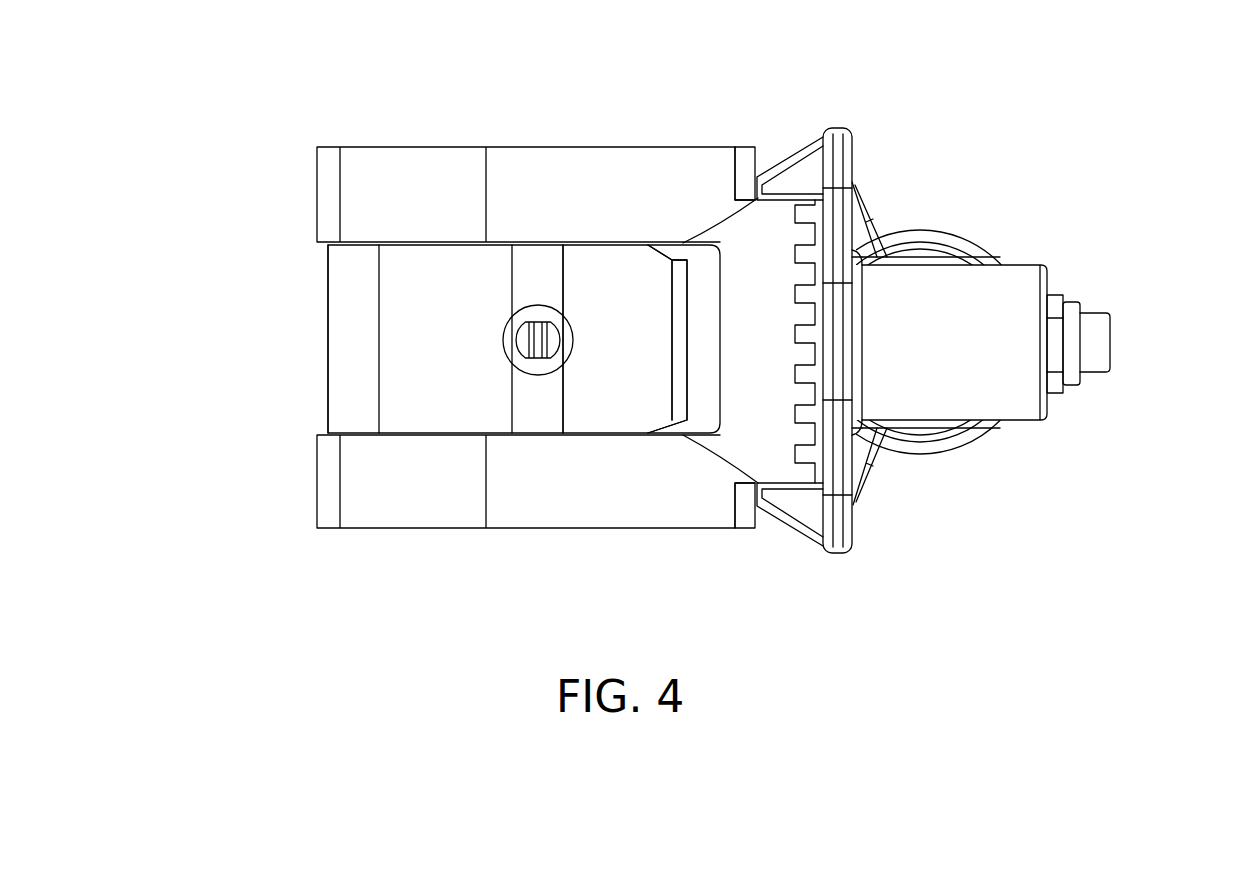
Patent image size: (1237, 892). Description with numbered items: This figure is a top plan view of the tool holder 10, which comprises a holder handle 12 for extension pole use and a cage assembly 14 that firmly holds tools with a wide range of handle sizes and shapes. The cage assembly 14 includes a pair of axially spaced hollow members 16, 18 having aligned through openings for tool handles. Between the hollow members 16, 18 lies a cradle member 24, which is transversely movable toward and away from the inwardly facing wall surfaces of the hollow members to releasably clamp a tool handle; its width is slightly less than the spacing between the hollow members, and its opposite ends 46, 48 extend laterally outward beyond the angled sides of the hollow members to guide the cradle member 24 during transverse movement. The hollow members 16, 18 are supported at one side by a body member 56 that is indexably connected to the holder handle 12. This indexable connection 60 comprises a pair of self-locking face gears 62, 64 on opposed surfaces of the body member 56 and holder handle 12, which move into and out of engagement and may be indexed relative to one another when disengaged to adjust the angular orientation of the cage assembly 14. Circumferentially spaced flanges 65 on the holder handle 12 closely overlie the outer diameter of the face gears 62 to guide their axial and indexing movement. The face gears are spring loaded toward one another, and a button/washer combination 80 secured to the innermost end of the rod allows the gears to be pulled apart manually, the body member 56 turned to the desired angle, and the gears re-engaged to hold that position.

The tool holder 10 is at (880, 97).
The holder handle 12 is at (948, 435).
The cage assembly 14 is at (679, 122).
The hollow member 16 is at (433, 165).
The hollow member 18 is at (455, 508).
The cradle member 24 is at (585, 405).
The end of cradle member 46 is at (352, 348).
The end of cradle member 48 is at (652, 345).
The body member 56 is at (752, 213).
The indexable connection 60 is at (848, 212).
The self-locking face gear 62 is at (800, 250).
The self-locking face gear 64 is at (853, 253).
The flange 65 is at (797, 158).
The button/washer combination 80 is at (1097, 336).